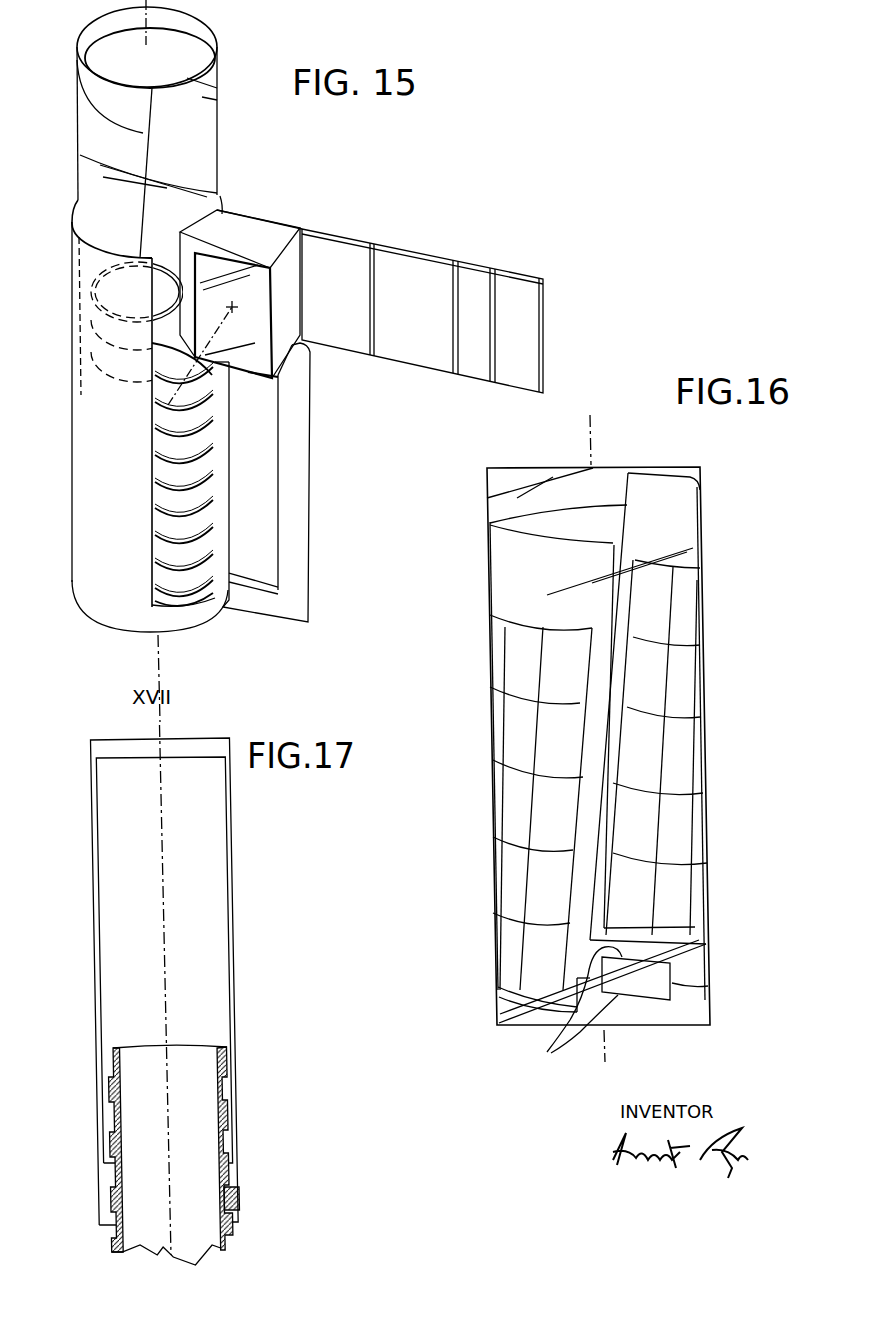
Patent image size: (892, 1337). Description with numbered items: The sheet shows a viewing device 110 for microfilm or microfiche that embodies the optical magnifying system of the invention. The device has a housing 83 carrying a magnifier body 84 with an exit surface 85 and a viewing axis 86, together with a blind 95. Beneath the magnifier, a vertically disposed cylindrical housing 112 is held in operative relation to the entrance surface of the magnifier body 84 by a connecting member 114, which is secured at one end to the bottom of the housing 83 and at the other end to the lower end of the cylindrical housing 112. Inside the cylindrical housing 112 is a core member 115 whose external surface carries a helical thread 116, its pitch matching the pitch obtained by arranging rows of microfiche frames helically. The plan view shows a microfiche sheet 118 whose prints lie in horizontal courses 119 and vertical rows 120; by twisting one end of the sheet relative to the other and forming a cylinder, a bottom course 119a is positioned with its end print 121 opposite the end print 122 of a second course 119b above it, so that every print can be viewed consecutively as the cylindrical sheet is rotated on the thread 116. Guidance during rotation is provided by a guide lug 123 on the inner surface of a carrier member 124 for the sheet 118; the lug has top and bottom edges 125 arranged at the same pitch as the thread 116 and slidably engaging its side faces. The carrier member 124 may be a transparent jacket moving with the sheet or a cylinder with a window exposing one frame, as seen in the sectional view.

In FIG. 15, the housing 83 is at (236, 226).
In FIG. 15, the viewing device 110 is at (288, 214).
In FIG. 15, the blind 95 is at (515, 270).
In FIG. 15, the exit surface 85 is at (264, 308).
In FIG. 15, the magnifier body 84 is at (232, 342).
In FIG. 15, the viewing axis 86 is at (142, 440).
In FIG. 15, the cylindrical housing 112 is at (95, 530).
In FIG. 15, the connecting member 114 is at (295, 545).
In FIG. 15, the core member 115 is at (213, 475).
In FIG. 17, the core member 115 is at (223, 1086).
In FIG. 15, the helical thread 116 is at (191, 565).
In FIG. 17, the helical thread 116 is at (229, 1116).
In FIG. 16, the microfiche sheet 118 is at (676, 473).
In FIG. 17, the microfiche sheet 118 is at (230, 931).
In FIG. 16, the vertical rows 120 is at (652, 583).
In FIG. 16, the horizontal courses 119 is at (640, 822).
In FIG. 16, the bottom course 119a is at (668, 897).
In FIG. 16, the second course 119b is at (513, 879).
In FIG. 16, the end print 121 is at (645, 909).
In FIG. 16, the end print 122 is at (565, 902).
In FIG. 16, the guide lug 123 is at (668, 982).
In FIG. 17, the guide lug 123 is at (239, 1196).
In FIG. 16, the carrier member 124 is at (712, 1014).
In FIG. 17, the carrier member 124 is at (234, 969).
In FIG. 16, the top and bottom edges 125 is at (562, 1009).